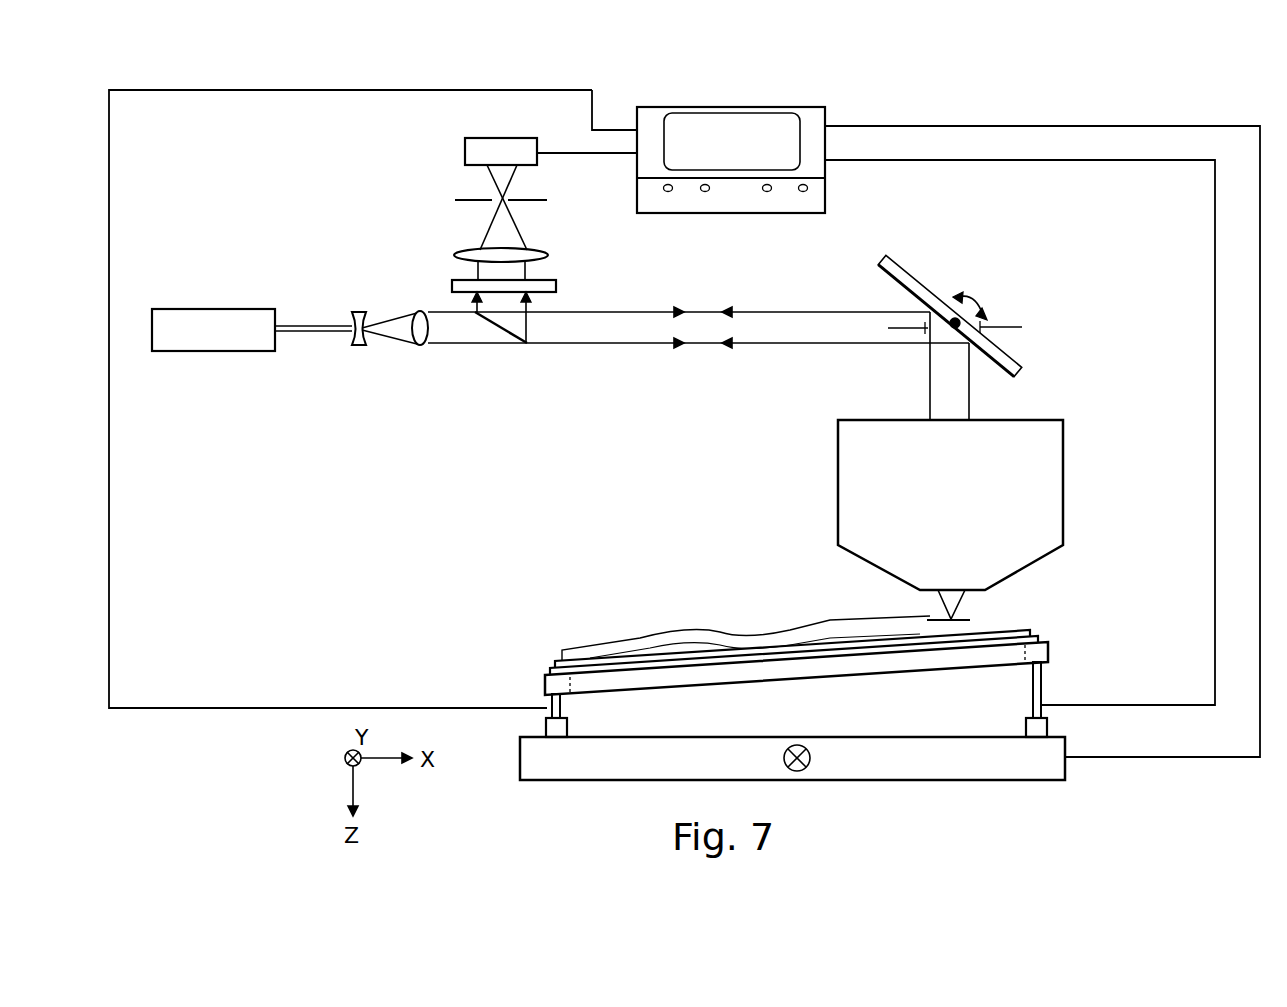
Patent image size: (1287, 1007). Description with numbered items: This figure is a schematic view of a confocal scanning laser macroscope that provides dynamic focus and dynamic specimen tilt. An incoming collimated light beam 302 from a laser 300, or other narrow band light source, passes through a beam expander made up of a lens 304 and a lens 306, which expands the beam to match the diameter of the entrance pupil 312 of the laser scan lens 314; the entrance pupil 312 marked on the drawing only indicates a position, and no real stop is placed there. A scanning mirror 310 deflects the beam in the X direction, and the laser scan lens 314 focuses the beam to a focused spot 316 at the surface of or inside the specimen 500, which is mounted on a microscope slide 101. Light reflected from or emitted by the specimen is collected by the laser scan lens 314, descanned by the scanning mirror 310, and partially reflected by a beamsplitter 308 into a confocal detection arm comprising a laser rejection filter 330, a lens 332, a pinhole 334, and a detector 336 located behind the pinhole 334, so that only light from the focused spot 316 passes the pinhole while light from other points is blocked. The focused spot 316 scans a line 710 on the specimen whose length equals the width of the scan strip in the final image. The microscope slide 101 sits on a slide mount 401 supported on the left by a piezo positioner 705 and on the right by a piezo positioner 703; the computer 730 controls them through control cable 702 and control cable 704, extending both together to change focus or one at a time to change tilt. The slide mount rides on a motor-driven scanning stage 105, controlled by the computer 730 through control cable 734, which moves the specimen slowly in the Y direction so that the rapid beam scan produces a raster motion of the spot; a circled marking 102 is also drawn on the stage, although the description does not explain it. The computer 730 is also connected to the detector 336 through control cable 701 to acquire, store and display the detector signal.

The computer 730 is at (735, 107).
The control cable 734 is at (918, 126).
The control cable 701 is at (562, 153).
The control cable 702 is at (1062, 160).
The control cable 704 is at (109, 625).
The piezo positioner 703 is at (1043, 693).
The piezo positioner 705 is at (545, 735).
The detector 336 is at (465, 152).
The pinhole 334 is at (455, 200).
The lens 332 is at (455, 255).
The laser rejection filter 330 is at (452, 286).
The collimated light beam 302 is at (307, 325).
The laser 300 is at (191, 309).
The lens 304 is at (353, 346).
The lens 306 is at (412, 346).
The beamsplitter 308 is at (522, 346).
The scanning mirror 310 is at (935, 290).
The entrance pupil 312 is at (1010, 327).
The laser scan lens 314 is at (1063, 488).
The focused spot 316 is at (948, 618).
The specimen 500 is at (1015, 620).
The scan line 710 is at (945, 618).
The microscope slide 101 is at (1040, 636).
The slide mount 401 is at (1048, 650).
The pivot 102 is at (800, 771).
The scanning stage 105 is at (1026, 781).